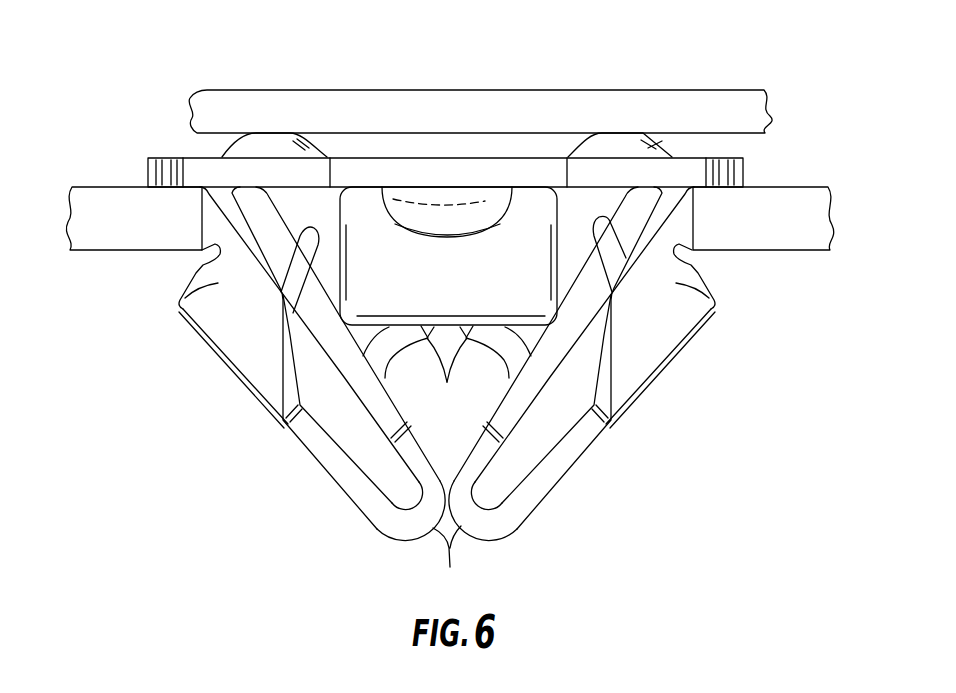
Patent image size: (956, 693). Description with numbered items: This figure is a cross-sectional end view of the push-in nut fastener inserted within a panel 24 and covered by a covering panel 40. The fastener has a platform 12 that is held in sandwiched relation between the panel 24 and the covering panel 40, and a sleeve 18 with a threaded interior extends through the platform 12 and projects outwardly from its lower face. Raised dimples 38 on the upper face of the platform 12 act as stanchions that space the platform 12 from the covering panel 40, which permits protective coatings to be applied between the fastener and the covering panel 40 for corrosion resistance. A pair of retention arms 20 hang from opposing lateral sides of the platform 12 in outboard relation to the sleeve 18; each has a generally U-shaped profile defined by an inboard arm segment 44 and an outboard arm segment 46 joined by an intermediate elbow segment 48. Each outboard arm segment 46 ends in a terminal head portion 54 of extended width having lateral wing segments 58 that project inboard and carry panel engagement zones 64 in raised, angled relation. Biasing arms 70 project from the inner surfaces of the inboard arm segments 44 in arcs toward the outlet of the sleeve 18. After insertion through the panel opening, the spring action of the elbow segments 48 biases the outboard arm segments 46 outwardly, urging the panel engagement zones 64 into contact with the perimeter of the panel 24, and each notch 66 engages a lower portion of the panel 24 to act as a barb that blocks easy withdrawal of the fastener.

The platform 12 is at (145, 153).
The sleeve 18 is at (470, 230).
The retention arms 20 is at (468, 381).
The panel 24 is at (69, 185).
The raised dimples 38 is at (225, 152).
The covering panel 40 is at (769, 90).
The inboard arm segment 44 is at (314, 260).
The outboard arm segment 46 is at (345, 496).
The intermediate elbow segment 48 is at (450, 567).
The terminal head portion 54 is at (492, 372).
The lateral wing segments 58 is at (218, 364).
The panel engagement zones 64 is at (194, 278).
The notch 66 is at (205, 252).
The biasing arms 70 is at (447, 373).